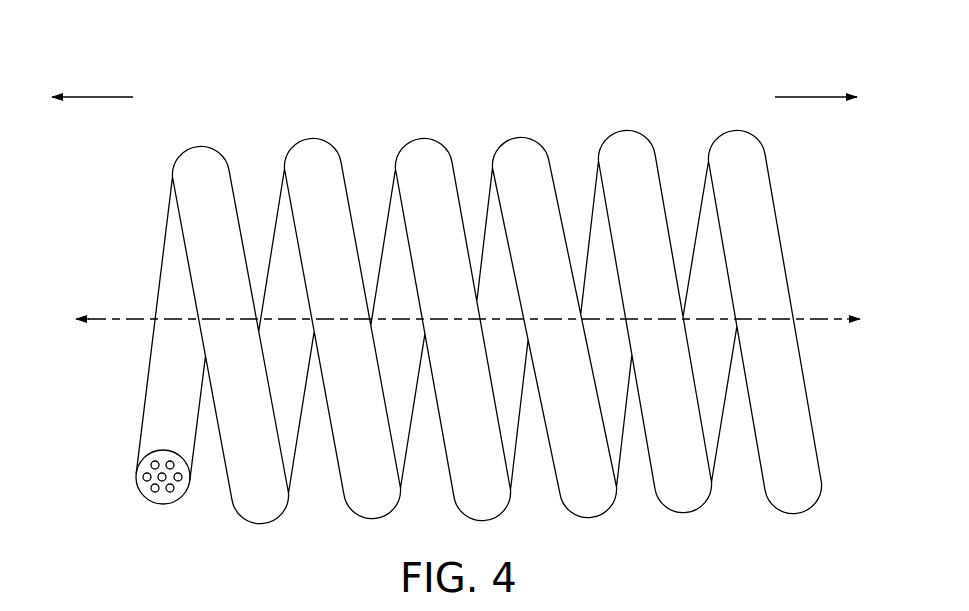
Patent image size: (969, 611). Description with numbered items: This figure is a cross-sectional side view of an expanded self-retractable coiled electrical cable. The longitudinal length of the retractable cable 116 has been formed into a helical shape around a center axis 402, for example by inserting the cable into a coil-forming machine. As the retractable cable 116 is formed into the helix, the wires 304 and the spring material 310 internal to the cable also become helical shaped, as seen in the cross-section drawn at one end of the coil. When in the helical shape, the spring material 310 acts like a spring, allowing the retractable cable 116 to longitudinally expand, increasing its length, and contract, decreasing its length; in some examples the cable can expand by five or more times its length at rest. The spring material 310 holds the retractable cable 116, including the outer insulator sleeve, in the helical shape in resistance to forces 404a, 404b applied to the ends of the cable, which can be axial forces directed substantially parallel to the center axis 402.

The retractable cable 116 is at (271, 121).
The wires 304 is at (152, 494).
The spring material 310 is at (165, 480).
The center axis 402 is at (827, 321).
The force 404a is at (100, 96).
The force 404b is at (810, 96).